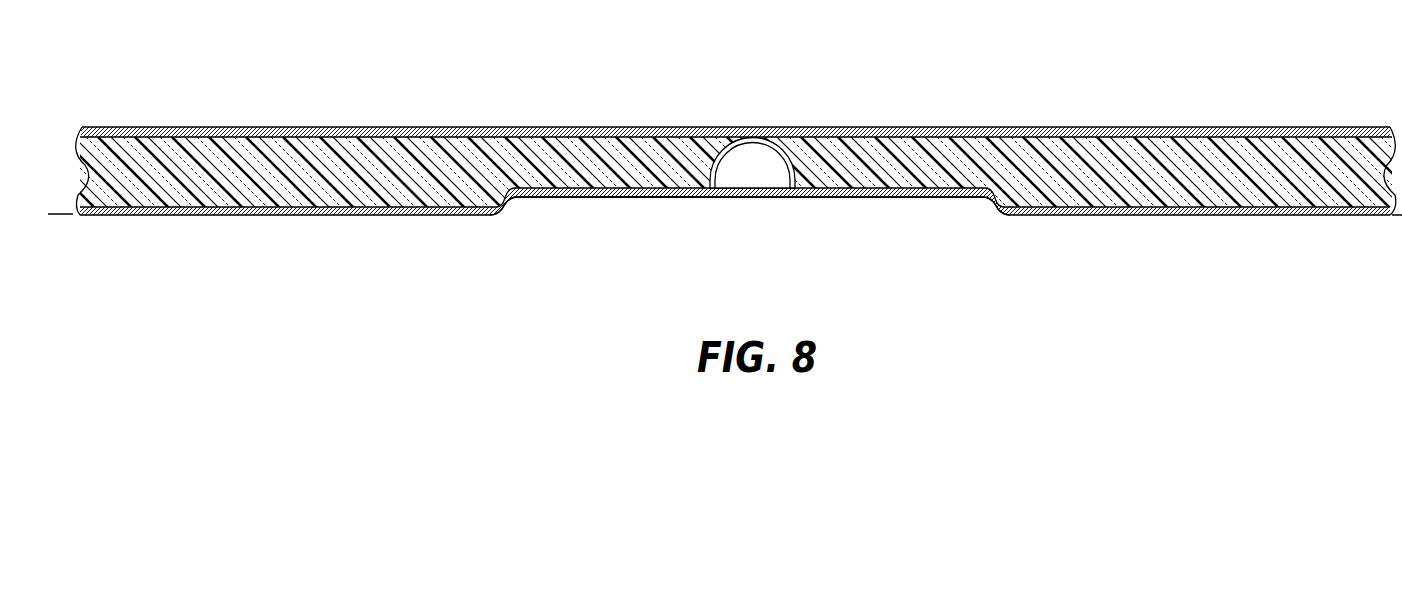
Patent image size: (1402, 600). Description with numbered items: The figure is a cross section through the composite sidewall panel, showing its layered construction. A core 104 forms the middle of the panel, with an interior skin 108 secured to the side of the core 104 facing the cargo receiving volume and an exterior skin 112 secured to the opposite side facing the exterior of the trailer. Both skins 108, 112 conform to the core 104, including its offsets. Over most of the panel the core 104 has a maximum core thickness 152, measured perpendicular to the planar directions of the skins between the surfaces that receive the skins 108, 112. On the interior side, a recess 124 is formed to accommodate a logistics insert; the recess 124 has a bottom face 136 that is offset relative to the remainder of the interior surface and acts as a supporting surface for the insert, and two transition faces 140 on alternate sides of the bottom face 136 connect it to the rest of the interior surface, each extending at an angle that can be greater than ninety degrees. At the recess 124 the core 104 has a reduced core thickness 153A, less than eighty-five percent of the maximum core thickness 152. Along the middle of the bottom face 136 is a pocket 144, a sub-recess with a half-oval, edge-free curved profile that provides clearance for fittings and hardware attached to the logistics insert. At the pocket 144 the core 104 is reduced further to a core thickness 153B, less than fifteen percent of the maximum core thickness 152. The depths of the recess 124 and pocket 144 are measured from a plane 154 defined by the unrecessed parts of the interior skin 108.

The core 104 is at (1072, 164).
The interior skin 108 is at (1160, 215).
The exterior skin 112 is at (891, 128).
The recess 124 is at (897, 200).
The bottom face 136 is at (646, 200).
The transition face 140 is at (508, 203).
The pocket 144 is at (747, 150).
The maximum core thickness 152 is at (287, 245).
The reduced core thickness at the recess 153A is at (597, 233).
The reduced core thickness at the pocket 153B is at (746, 150).
The plane 154 is at (53, 216).